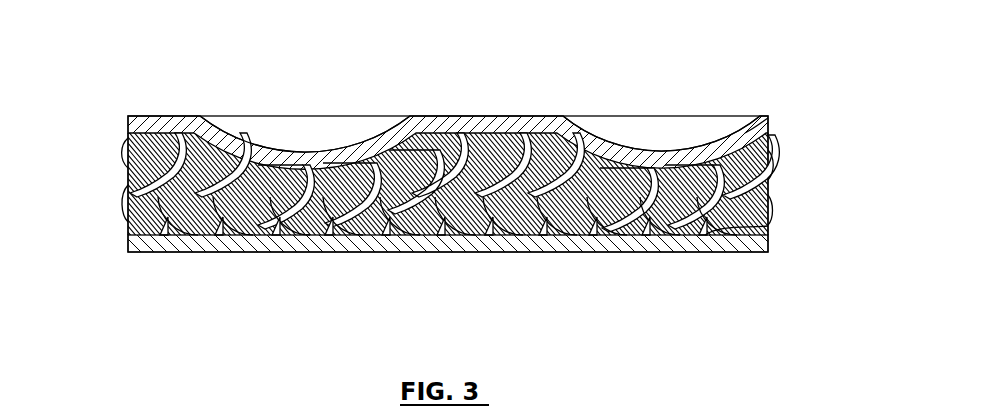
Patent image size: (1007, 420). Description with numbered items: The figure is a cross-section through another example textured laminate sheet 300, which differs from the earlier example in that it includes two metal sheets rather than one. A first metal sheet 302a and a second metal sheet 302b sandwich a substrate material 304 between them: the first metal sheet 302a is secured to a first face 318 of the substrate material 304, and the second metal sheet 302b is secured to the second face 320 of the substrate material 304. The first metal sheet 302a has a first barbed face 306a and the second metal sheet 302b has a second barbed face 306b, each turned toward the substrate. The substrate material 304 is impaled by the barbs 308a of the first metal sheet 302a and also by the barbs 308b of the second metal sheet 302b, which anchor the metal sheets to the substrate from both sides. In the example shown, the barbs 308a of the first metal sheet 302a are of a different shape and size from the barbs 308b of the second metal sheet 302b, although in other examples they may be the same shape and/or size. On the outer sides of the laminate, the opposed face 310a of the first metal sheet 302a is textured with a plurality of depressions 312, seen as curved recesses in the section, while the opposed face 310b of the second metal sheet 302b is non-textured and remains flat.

The textured laminate sheet 300 is at (715, 97).
The first metal sheet 302a is at (165, 125).
The second metal sheet 302b is at (170, 247).
The substrate material 304 is at (406, 255).
The first barbed face 306a is at (128, 157).
The second barbed face 306b is at (128, 203).
The barbs of the first metal sheet 308a is at (766, 163).
The barbs of the second metal sheet 308b is at (766, 211).
The opposed face of the first metal sheet 310a is at (457, 116).
The opposed face of the second metal sheet 310b is at (556, 255).
The depressions 312 is at (322, 147).
The first face of the substrate material 318 is at (760, 119).
The second face of the substrate material 320 is at (714, 240).